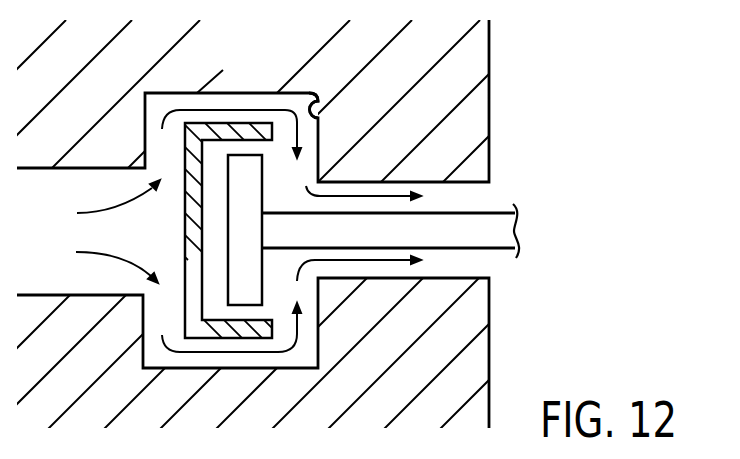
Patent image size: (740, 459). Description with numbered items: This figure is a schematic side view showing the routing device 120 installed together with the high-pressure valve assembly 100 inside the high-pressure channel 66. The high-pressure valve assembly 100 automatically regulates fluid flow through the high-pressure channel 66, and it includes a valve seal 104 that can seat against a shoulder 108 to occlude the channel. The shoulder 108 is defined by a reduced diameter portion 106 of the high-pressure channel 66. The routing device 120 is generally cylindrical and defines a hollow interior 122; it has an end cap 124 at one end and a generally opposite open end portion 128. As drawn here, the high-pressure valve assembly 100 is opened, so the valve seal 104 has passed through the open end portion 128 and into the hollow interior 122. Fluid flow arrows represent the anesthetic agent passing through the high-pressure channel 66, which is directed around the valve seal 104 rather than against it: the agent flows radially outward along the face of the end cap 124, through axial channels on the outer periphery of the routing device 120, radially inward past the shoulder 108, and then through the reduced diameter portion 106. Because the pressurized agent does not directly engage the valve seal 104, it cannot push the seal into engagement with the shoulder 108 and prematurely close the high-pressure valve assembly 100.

The high-pressure channel 66 is at (46, 242).
The high-pressure valve assembly 100 is at (453, 198).
The valve seal 104 is at (226, 180).
The reduced diameter portion 106 is at (477, 197).
The shoulder 108 is at (311, 97).
The routing device 120 is at (246, 104).
The hollow interior 122 is at (217, 197).
The end cap 124 is at (185, 233).
The open end portion 128 is at (304, 171).